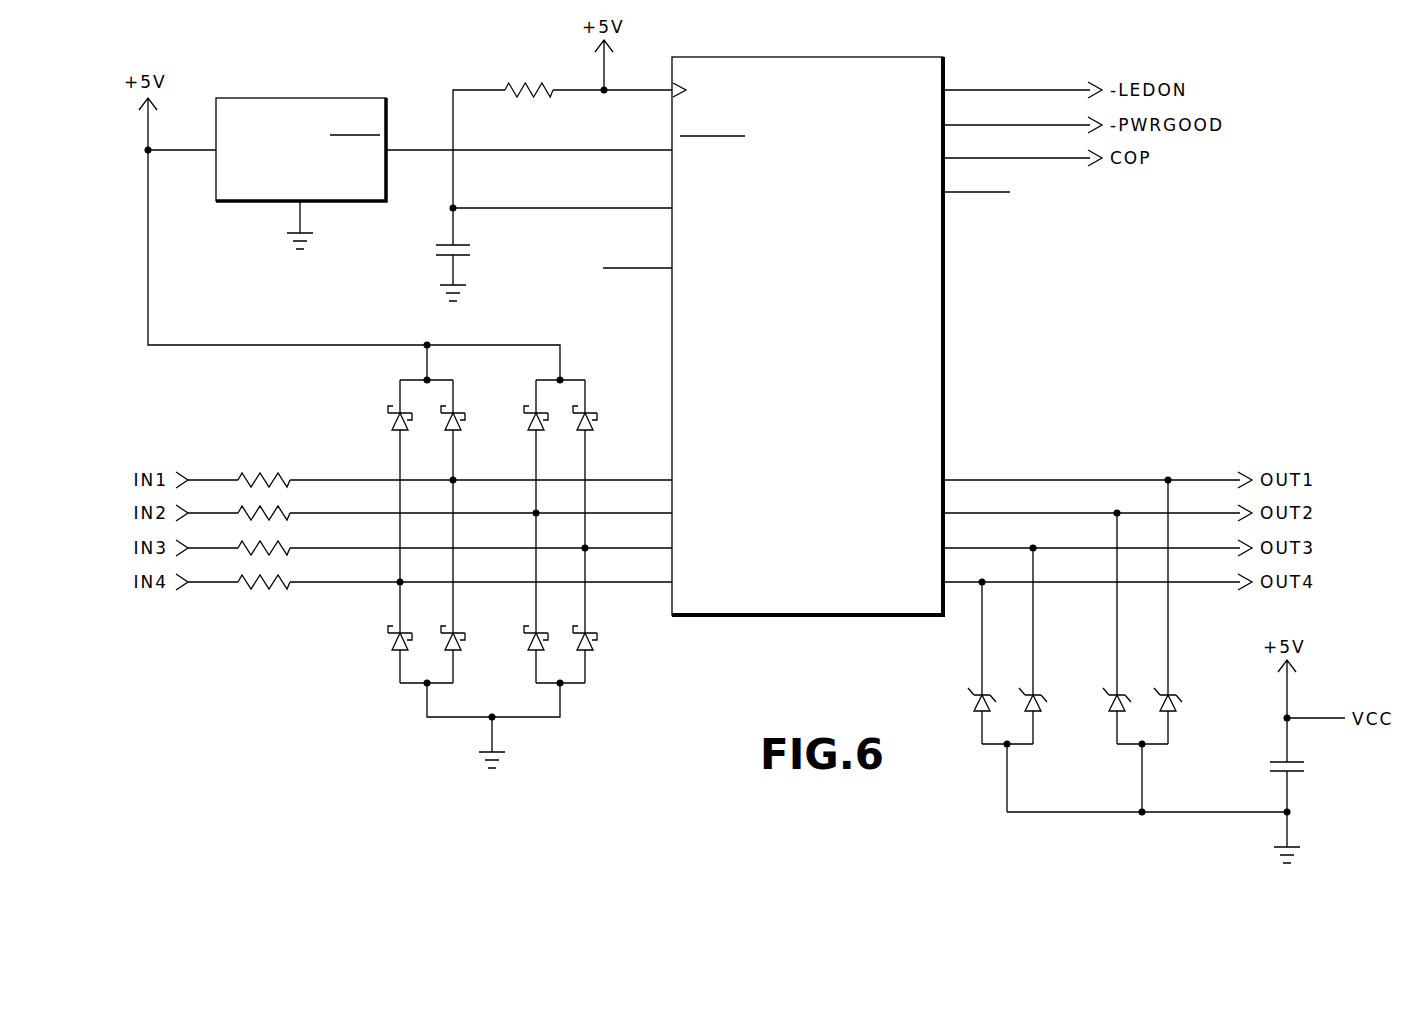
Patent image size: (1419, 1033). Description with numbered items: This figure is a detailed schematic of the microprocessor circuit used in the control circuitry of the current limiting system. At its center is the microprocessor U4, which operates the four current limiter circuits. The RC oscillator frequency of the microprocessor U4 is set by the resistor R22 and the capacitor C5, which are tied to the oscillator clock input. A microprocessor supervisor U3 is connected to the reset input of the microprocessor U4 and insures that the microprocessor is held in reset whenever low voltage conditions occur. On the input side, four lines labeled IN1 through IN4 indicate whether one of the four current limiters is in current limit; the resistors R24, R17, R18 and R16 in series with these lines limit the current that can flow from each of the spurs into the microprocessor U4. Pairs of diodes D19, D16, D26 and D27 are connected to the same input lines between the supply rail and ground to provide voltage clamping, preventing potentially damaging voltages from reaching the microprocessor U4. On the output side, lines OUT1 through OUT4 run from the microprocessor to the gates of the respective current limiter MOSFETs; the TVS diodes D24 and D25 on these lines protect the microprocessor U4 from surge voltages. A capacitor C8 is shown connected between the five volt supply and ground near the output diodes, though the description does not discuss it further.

The microprocessor supervisor U3 is at (301, 173).
The microprocessor U4 is at (807, 336).
The resistor R22 is at (562, 134).
The capacitor C5 is at (554, 253).
The current limiting resistor R24 is at (455, 472).
The current limiting resistor R17 is at (455, 505).
The current limiting resistor R18 is at (455, 540).
The current limiting resistor R16 is at (455, 574).
The clamping diode D19 is at (399, 419).
The clamping diode D16 is at (586, 419).
The clamping diode D26 is at (397, 654).
The clamping diode D27 is at (586, 654).
The TVS diode D24 is at (977, 750).
The TVS diode D25 is at (1167, 750).
The capacitor C8 is at (1307, 761).